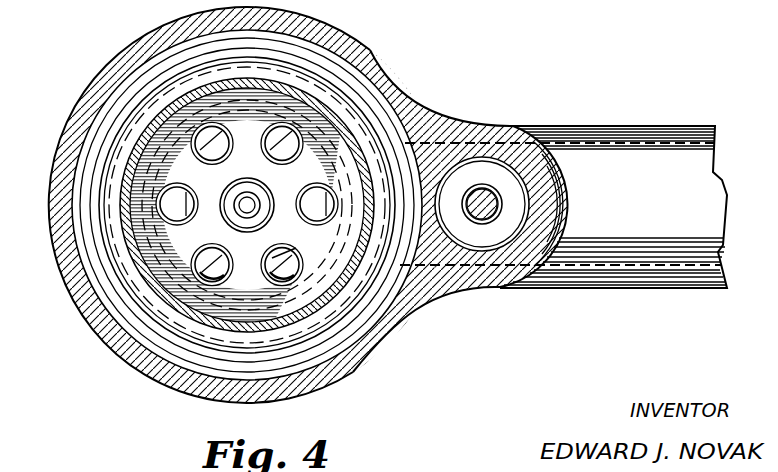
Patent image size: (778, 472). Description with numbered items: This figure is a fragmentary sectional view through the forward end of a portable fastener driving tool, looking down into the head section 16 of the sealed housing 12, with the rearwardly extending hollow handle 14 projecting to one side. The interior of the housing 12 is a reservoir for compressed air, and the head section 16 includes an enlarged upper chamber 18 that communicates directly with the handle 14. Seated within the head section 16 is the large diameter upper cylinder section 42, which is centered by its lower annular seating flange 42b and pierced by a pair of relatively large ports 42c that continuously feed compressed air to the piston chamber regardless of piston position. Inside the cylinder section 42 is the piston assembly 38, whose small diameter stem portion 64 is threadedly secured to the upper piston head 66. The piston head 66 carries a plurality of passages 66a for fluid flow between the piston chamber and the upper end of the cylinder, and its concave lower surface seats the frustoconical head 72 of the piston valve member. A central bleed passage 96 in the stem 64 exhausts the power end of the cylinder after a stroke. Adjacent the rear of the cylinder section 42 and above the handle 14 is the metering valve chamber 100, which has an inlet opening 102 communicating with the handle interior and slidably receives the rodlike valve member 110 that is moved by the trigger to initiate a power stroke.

The housing 12 is at (705, 290).
The hollow handle 14 is at (714, 136).
The head section 16 is at (63, 135).
The upper chamber 18 is at (93, 122).
The piston assembly 38 is at (160, 280).
The upper cylinder section 42 is at (337, 102).
The lower seating flange 42b is at (127, 275).
The ports 42c is at (207, 77).
The stem portion 64 is at (247, 222).
The upper piston head 66 is at (182, 288).
The passages 66a is at (213, 164).
The head of piston valve member 72 is at (283, 265).
The bleed passage 96 is at (248, 203).
The metering valve chamber 100 is at (492, 247).
The inlet opening 102 is at (496, 196).
The valve member 110 is at (477, 190).